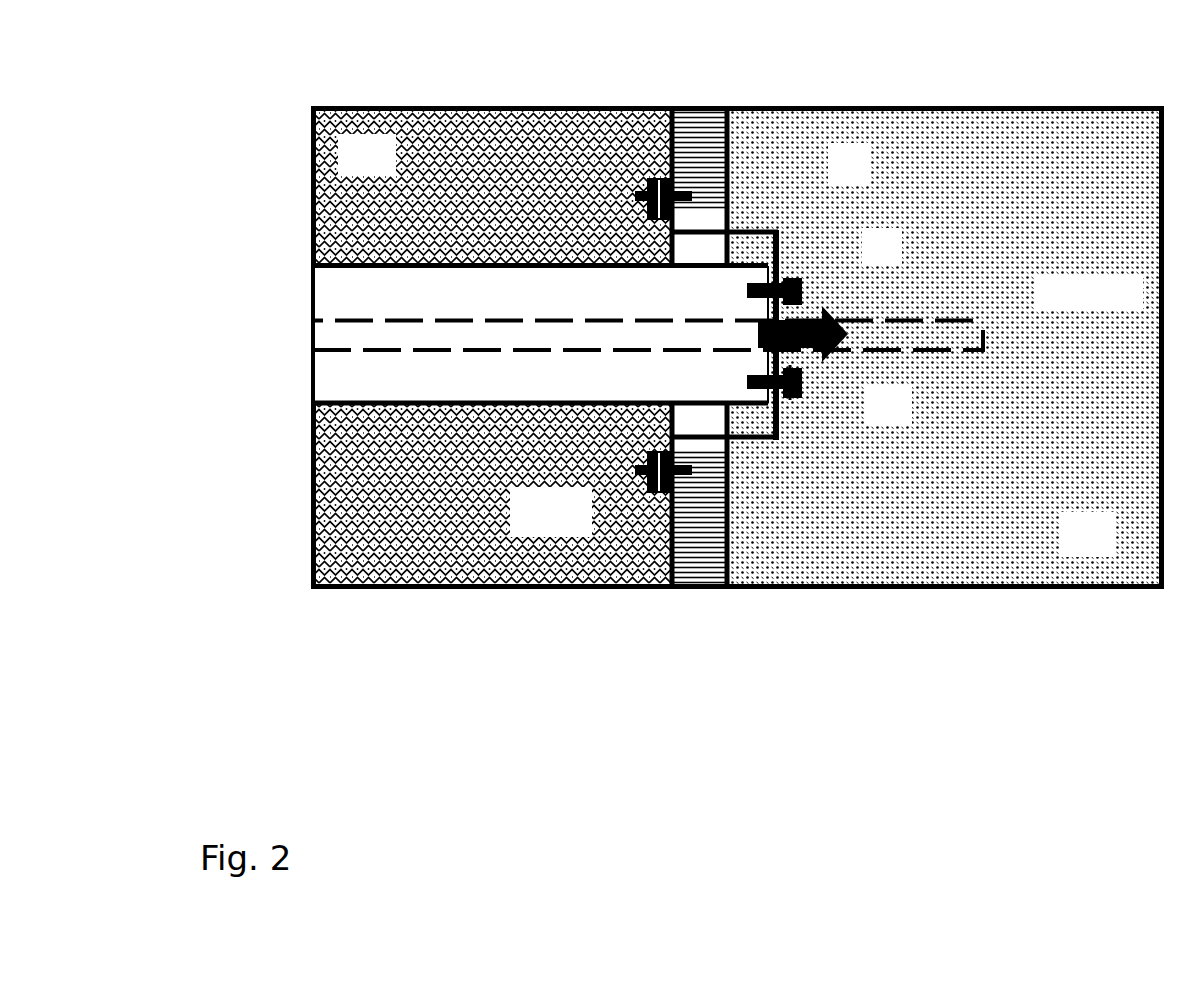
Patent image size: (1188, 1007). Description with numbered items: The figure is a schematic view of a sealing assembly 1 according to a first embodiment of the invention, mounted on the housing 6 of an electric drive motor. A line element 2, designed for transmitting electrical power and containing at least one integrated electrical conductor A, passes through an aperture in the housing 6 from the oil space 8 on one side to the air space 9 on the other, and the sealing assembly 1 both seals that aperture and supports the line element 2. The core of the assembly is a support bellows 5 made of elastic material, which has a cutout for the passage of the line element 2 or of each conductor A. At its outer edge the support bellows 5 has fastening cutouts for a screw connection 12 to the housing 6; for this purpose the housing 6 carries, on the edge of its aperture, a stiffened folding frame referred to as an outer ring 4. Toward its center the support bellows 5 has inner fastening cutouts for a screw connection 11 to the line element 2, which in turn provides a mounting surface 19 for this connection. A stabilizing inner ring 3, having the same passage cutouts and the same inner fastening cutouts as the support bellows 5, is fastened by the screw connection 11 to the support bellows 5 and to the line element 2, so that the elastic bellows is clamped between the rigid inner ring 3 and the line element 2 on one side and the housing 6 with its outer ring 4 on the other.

The sealing assembly 1 is at (783, 472).
The line element 2 is at (367, 281).
The inner ring 3 is at (790, 275).
The outer ring 4 is at (648, 192).
The support bellows 5 is at (745, 230).
The housing 6 is at (697, 133).
The oil space 8 is at (493, 348).
The air space 9 is at (944, 348).
The screw connection 11 is at (805, 372).
The screw connection 12 is at (643, 487).
The mounting surface 19 is at (778, 412).
The electrical conductor A is at (962, 342).